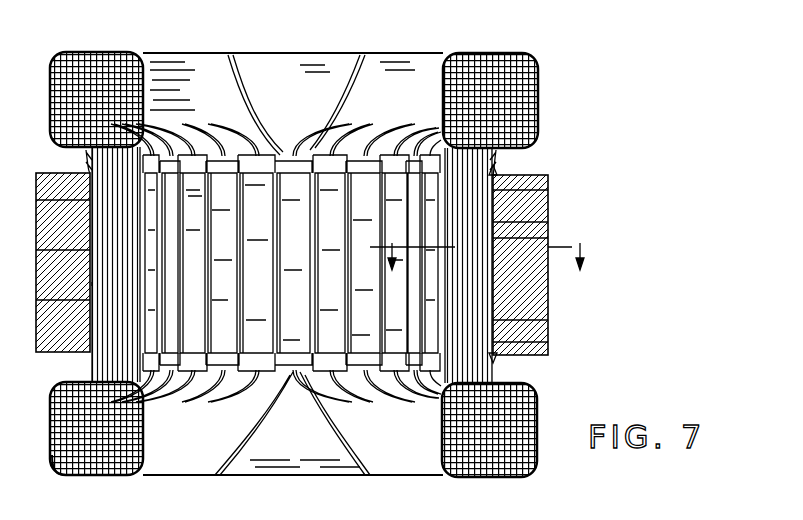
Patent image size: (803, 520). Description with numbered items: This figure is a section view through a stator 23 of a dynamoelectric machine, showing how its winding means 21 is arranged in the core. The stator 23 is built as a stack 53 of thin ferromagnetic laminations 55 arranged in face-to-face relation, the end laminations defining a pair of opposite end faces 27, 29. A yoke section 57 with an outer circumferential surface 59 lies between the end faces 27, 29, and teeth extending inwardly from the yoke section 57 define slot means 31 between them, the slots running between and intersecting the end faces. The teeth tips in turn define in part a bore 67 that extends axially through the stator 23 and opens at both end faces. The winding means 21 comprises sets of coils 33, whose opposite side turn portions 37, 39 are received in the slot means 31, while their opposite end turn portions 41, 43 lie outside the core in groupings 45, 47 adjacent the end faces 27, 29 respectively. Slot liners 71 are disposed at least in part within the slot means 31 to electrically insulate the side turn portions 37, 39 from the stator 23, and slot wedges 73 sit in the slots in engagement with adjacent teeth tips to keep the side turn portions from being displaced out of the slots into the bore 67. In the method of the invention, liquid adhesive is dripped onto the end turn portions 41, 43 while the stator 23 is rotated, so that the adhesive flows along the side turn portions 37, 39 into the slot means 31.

The winding means 21 is at (580, 60).
The stator 23 is at (565, 198).
The end face 27 is at (497, 170).
The end face 29 is at (548, 356).
The slot means 31 is at (90, 310).
The coils 33 is at (52, 455).
The side turn portion 37 is at (115, 226).
The side turn portion 39 is at (468, 287).
The end turn portion 41 is at (105, 475).
The end turn portion 43 is at (115, 62).
The grouping 45 is at (400, 476).
The grouping 47 is at (370, 55).
The stack 53 is at (548, 190).
The laminations 55 is at (548, 238).
The yoke section 57 is at (548, 320).
The circumferential surface 59 is at (548, 342).
The bore 67 is at (140, 283).
The slot liners 71 is at (88, 160).
The slot wedges 73 is at (150, 380).